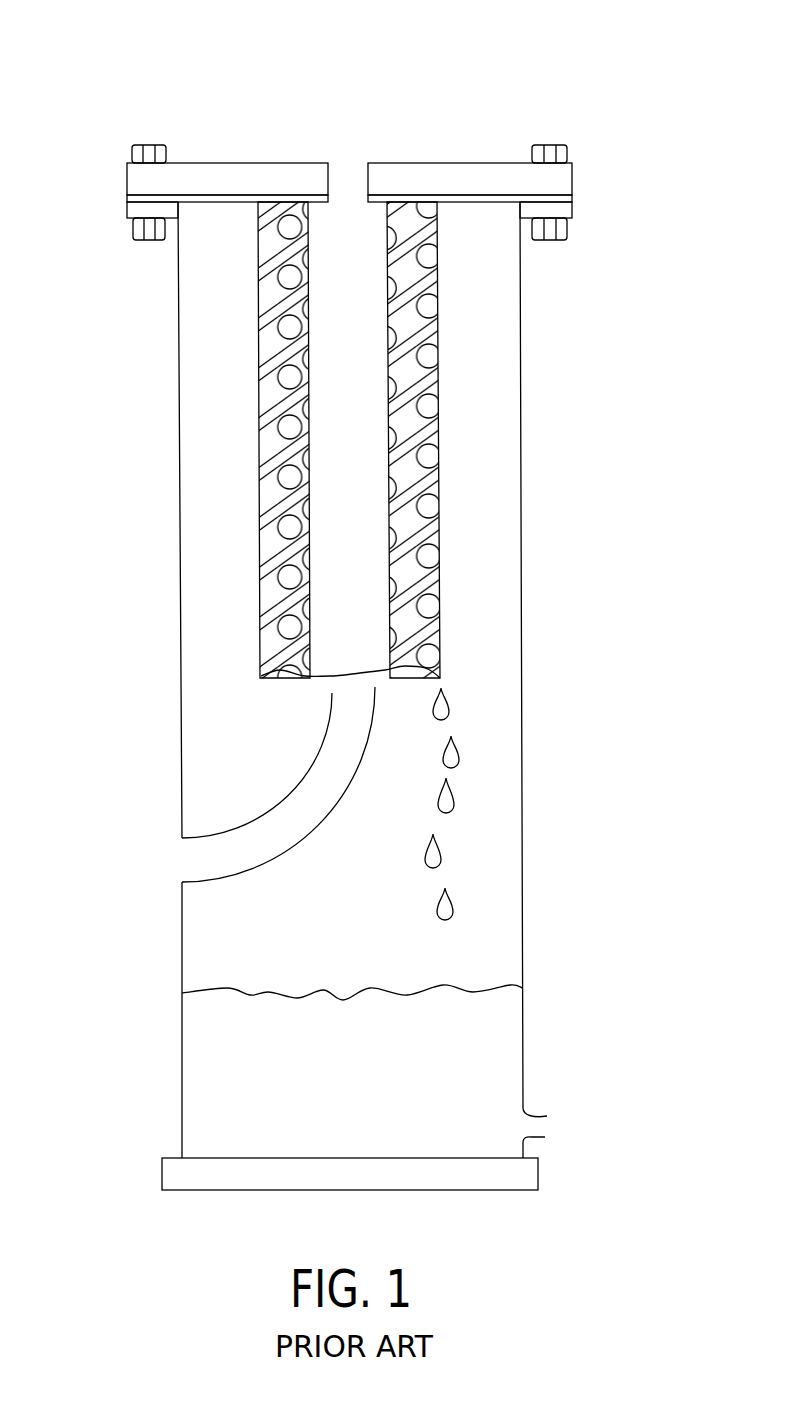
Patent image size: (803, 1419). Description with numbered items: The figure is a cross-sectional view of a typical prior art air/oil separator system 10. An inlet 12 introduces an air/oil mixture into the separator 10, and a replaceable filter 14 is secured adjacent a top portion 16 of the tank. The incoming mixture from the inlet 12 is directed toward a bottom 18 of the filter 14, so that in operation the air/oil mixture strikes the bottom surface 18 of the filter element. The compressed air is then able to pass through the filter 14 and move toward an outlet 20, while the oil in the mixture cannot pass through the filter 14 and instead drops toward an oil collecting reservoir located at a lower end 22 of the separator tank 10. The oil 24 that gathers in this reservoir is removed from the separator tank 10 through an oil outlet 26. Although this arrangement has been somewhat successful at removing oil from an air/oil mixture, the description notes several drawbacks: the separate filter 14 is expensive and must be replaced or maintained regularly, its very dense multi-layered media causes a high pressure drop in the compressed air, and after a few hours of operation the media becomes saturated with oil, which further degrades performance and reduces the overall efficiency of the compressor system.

The oil separator system 10 is at (703, 136).
The inlet 12 is at (148, 857).
The replaceable filter 14 is at (438, 372).
The top portion 16 is at (240, 165).
The bottom surface of the filter 18 is at (272, 674).
The outlet 20 is at (362, 148).
The lower end of the separator tank 22 is at (182, 1124).
The oil 24 is at (495, 1022).
The oil outlet 26 is at (543, 1130).